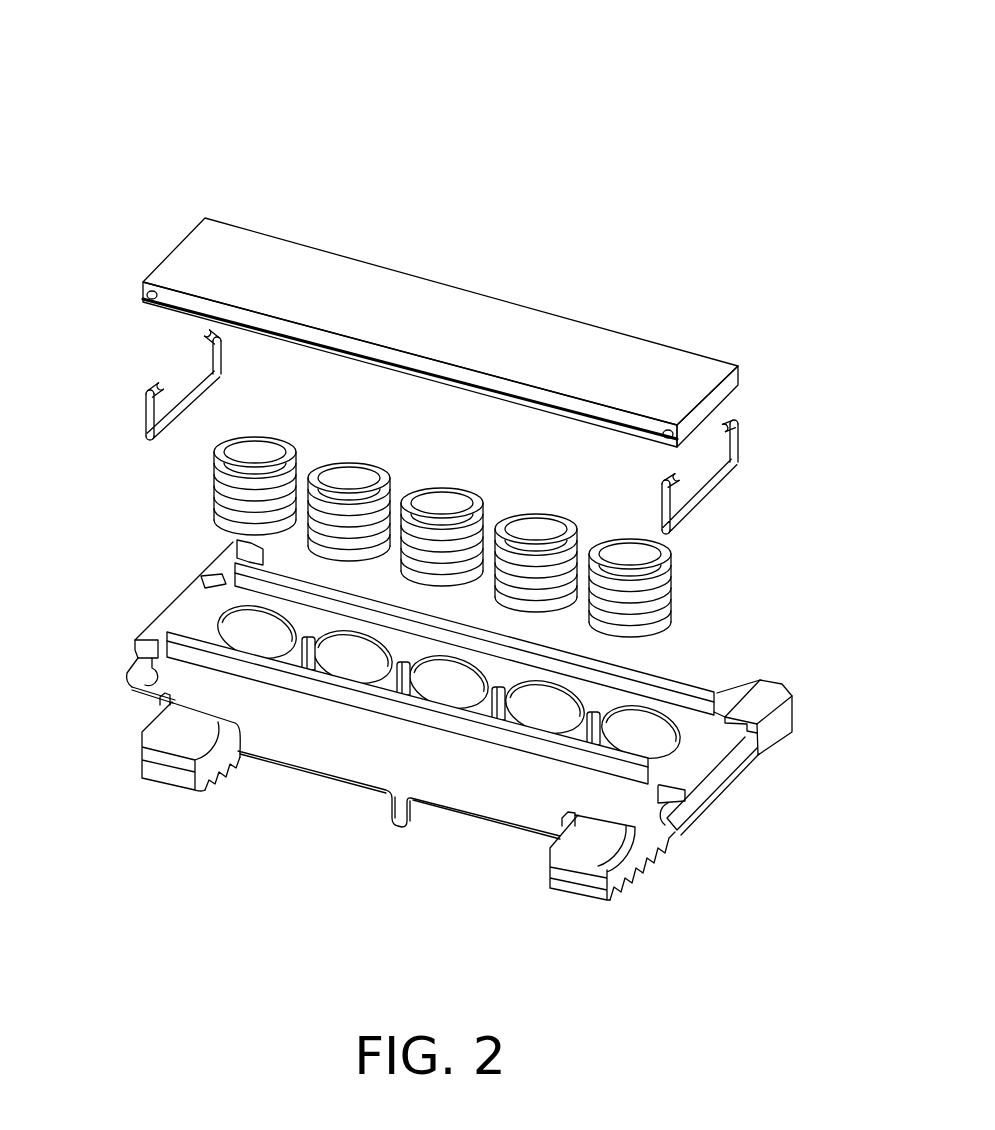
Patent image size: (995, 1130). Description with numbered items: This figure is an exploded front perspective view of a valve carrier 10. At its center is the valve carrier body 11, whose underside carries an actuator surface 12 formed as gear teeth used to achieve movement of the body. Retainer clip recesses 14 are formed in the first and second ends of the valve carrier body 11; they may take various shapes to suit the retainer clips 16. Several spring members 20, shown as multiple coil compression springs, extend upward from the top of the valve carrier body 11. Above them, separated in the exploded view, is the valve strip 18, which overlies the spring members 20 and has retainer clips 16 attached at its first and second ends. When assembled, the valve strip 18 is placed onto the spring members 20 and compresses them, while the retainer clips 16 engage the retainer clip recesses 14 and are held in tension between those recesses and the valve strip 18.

The valve carrier 10 is at (185, 133).
The valve carrier body 11 is at (482, 781).
The actuator surface 12 is at (226, 772).
The retainer clip recesses 14 is at (143, 686).
The retainer clips 16 is at (139, 416).
The valve strip 18 is at (488, 306).
The spring members 20 is at (421, 546).